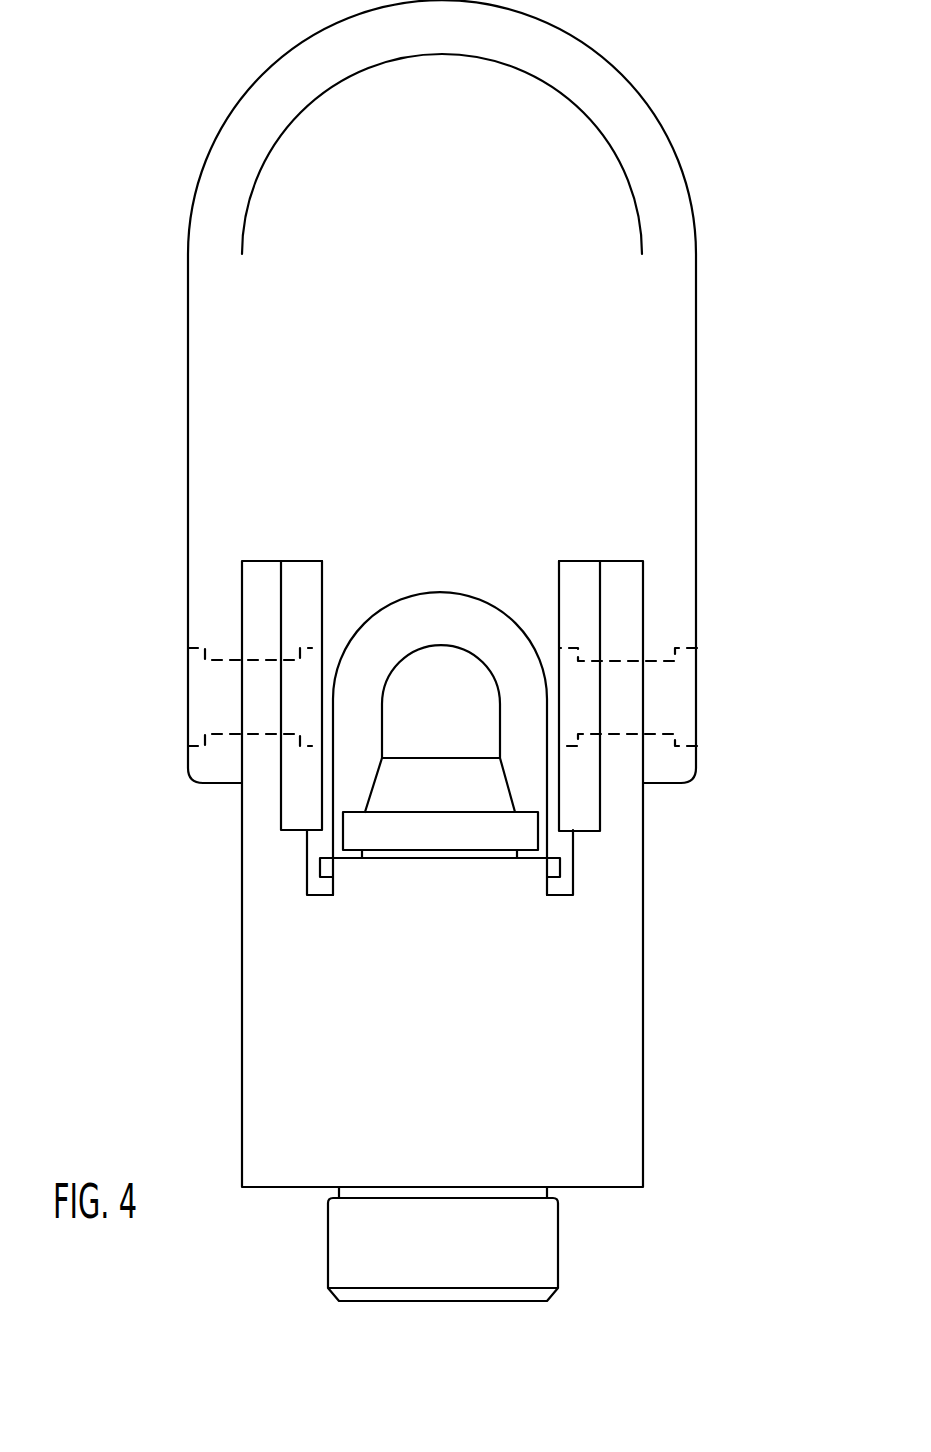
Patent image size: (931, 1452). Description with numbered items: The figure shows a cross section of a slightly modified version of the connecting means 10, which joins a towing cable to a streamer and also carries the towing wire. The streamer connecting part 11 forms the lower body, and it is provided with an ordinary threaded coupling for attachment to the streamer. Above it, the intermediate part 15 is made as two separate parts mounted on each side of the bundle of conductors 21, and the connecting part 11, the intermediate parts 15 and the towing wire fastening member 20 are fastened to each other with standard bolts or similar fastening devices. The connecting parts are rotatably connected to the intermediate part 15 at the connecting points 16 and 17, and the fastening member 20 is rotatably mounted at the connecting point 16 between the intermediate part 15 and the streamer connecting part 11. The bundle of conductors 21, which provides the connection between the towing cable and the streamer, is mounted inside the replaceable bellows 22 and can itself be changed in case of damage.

The connecting means 10 is at (160, 943).
The connecting part 11 is at (643, 1040).
The intermediate part 15 is at (296, 561).
The connecting point 16 is at (188, 676).
The connecting point 17 is at (188, 726).
The fastening member 20 is at (697, 256).
The bundle of conductors 21 is at (415, 677).
The bellows 22 is at (430, 592).